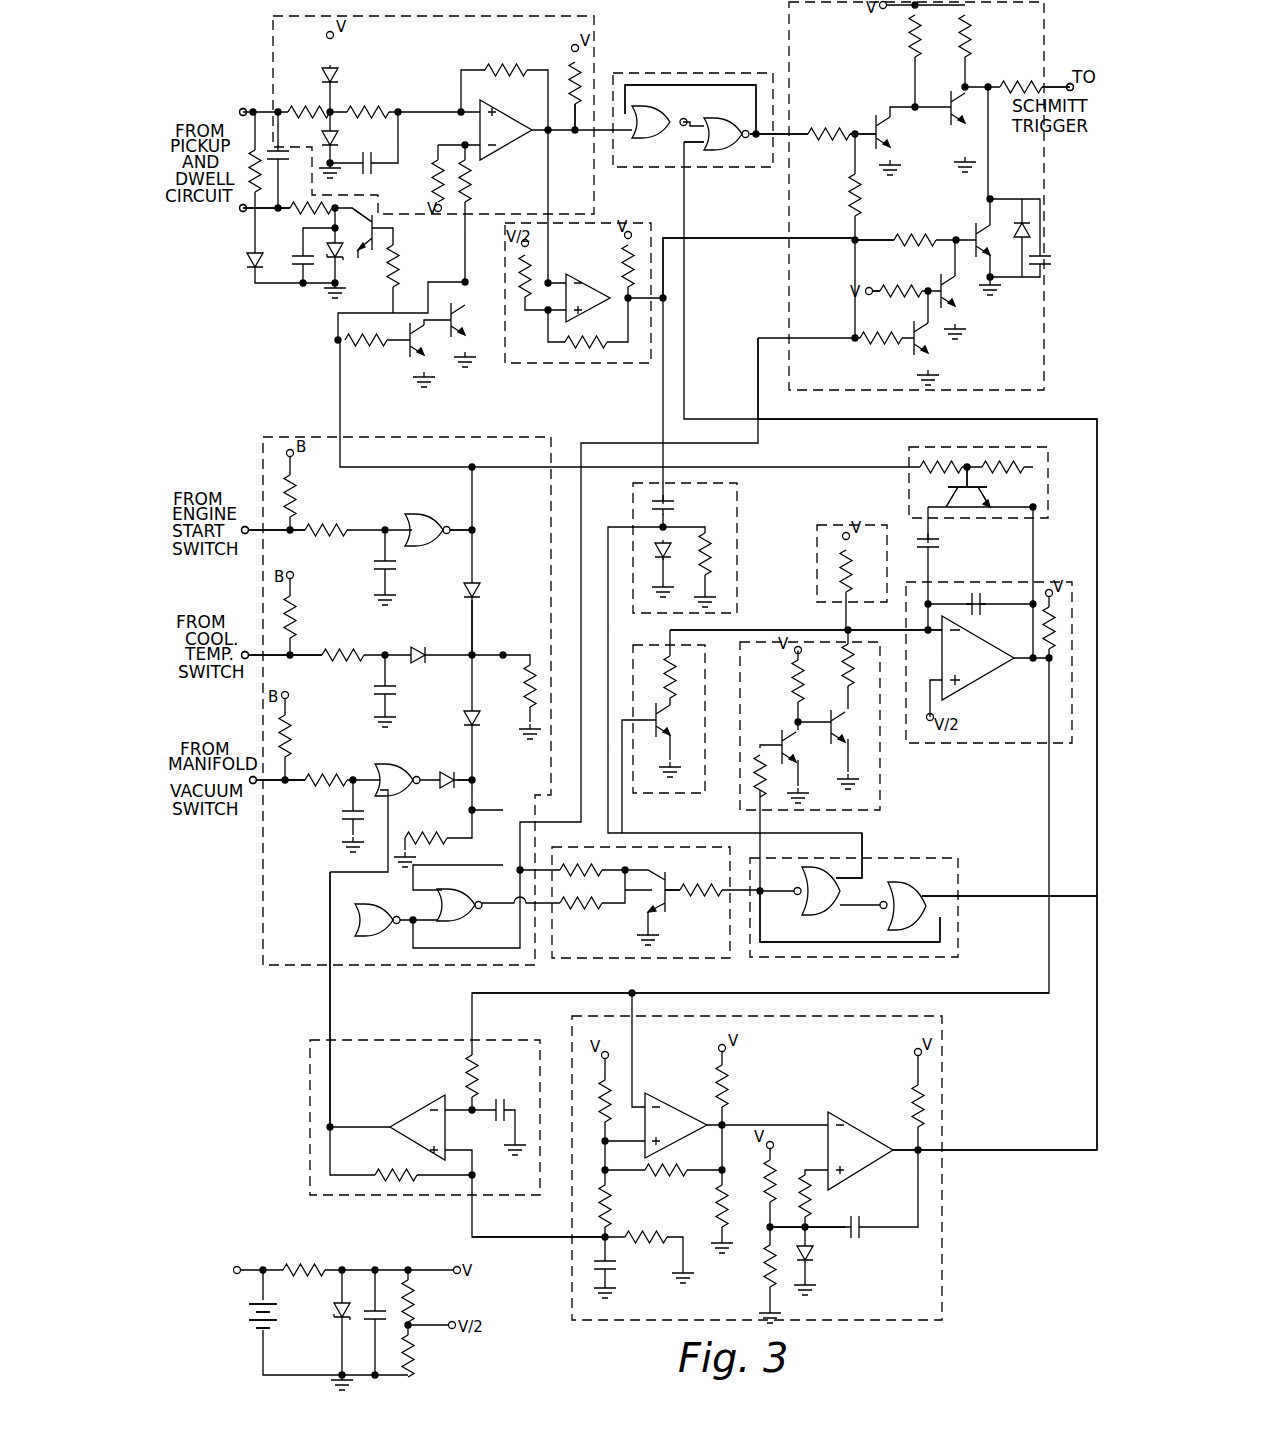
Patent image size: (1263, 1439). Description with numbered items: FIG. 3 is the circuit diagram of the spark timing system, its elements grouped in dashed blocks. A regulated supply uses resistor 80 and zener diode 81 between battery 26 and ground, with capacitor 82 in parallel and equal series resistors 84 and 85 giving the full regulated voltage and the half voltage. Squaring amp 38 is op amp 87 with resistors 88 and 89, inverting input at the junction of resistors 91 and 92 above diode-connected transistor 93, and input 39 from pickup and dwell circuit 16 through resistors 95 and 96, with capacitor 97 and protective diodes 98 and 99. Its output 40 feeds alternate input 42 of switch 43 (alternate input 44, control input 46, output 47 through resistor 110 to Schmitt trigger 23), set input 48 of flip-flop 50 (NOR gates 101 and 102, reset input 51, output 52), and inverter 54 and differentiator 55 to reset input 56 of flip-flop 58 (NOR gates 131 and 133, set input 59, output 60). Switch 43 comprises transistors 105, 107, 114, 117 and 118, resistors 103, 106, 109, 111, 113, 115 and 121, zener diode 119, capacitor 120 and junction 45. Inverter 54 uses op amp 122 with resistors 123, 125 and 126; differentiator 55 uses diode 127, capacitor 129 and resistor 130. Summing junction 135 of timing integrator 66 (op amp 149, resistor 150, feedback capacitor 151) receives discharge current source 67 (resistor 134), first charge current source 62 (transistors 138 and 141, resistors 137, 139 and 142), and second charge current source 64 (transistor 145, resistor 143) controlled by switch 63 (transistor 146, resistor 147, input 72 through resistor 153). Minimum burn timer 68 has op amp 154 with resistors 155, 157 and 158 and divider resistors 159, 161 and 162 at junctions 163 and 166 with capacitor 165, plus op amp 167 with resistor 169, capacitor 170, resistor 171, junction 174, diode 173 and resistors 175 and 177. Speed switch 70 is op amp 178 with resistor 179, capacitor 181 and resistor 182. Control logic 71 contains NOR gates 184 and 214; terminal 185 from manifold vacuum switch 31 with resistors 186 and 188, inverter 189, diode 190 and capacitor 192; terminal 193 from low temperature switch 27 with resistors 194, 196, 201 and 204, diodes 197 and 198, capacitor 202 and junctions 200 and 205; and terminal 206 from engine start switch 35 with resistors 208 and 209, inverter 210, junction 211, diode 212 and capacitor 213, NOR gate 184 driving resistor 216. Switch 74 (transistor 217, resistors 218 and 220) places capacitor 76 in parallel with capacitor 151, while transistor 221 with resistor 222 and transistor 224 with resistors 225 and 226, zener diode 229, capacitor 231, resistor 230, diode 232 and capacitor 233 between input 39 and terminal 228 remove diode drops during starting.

The pickup and dwell circuit 16 is at (245, 197).
The Schmitt trigger 23 is at (1062, 123).
The battery 26 is at (250, 1320).
The low temperature switch 27 is at (248, 679).
The manifold vacuum switch 31 is at (238, 810).
The engine start switch 35 is at (240, 555).
The squaring amp 38 is at (606, 40).
The input 39 is at (243, 112).
The output 40 is at (574, 135).
The alternate input 42 is at (840, 243).
The switch 43 is at (783, 42).
The alternate input 44 is at (852, 140).
The junction 45 is at (852, 335).
The control input 46 is at (762, 340).
The output 47 is at (1068, 82).
The set input 48 is at (638, 140).
The flip-flop 50 is at (656, 62).
The reset input 51 is at (704, 148).
The output 52 is at (752, 140).
The inverter 54 is at (566, 373).
The differentiator 55 is at (746, 499).
The reset input 56 is at (862, 876).
The flip-flop 58 is at (967, 868).
The set input 59 is at (930, 905).
The output 60 is at (797, 896).
The first charge current source 62 is at (890, 806).
The switch 63 is at (690, 970).
The second charge current source 64 is at (695, 798).
The timing integrator 66 is at (1006, 751).
The discharge current source 67 is at (851, 516).
The minimum burn timer 68 is at (953, 1204).
The speed switch 70 is at (382, 1028).
The control logic 71 is at (270, 429).
The input 72 is at (548, 935).
The switch 74 is at (899, 460).
The second capacitor 76 is at (938, 550).
The resistor 80 is at (300, 1264).
The zener diode 81 is at (336, 1318).
The capacitor 82 is at (382, 1308).
The resistor 84 is at (416, 1350).
The resistor 85 is at (416, 1298).
The op amp 87 is at (500, 125).
The resistor 88 is at (570, 70).
The resistor 89 is at (492, 66).
The resistor 91 is at (436, 168).
The resistor 92 is at (470, 178).
The transistor 93 is at (458, 318).
The resistor 95 is at (305, 106).
The resistor 96 is at (370, 106).
The capacitor 97 is at (372, 170).
The diode 98 is at (340, 138).
The diode 99 is at (336, 68).
The NOR gate 101 is at (650, 120).
The NOR gate 102 is at (714, 128).
The resistor 103 is at (815, 128).
The NPN transistor 105 is at (872, 118).
The resistor 106 is at (910, 36).
The NPN transistor 107 is at (945, 115).
The resistor 109 is at (962, 40).
The resistor 110 is at (1015, 82).
The resistor 111 is at (850, 192).
The resistor 113 is at (860, 345).
The NPN transistor 114 is at (915, 345).
The resistor 115 is at (896, 298).
The NPN transistor 117 is at (958, 302).
The NPN transistor 118 is at (976, 232).
The zener diode 119 is at (1020, 218).
The capacitor 120 is at (1036, 268).
The resistor 121 is at (910, 236).
The op amp 122 is at (590, 290).
The resistor 123 is at (525, 292).
The resistor 125 is at (640, 250).
The resistor 126 is at (590, 346).
The diode 127 is at (652, 546).
The capacitor 129 is at (672, 506).
The resistor 130 is at (712, 552).
The NOR gate 131 is at (823, 943).
The NOR gate 133 is at (926, 880).
The resistor 134 is at (840, 568).
The junction 135 is at (845, 628).
The resistor 137 is at (845, 660).
The NPN transistor 138 is at (848, 742).
The resistor 139 is at (794, 680).
The NPN transistor 141 is at (794, 770).
The resistor 142 is at (760, 760).
The resistor 143 is at (668, 672).
The NPN transistor 145 is at (665, 725).
The NPN transistor 146 is at (668, 880).
The resistor 147 is at (702, 896).
The op amp 149 is at (980, 672).
The resistor 150 is at (1048, 600).
The feedback capacitor 151 is at (978, 612).
The resistor 153 is at (578, 910).
The op amp 154 is at (672, 1108).
The resistor 155 is at (728, 1080).
The resistor 157 is at (726, 1205).
The resistor 158 is at (672, 1176).
The resistor 159 is at (568, 1080).
The resistor 161 is at (560, 1240).
The resistor 162 is at (648, 1242).
The junction 163 is at (600, 1130).
The capacitor 165 is at (598, 1268).
The junction 166 is at (612, 1225).
The op amp 167 is at (858, 1135).
The resistor 169 is at (925, 1108).
The capacitor 170 is at (866, 1235).
The resistor 171 is at (812, 1200).
The diode 173 is at (812, 1262).
The junction 174 is at (812, 1238).
The resistor 175 is at (774, 1175).
The resistor 177 is at (766, 1275).
The op amp 178 is at (410, 1118).
The resistor 179 is at (466, 1078).
The capacitor 181 is at (492, 1122).
The resistor 182 is at (385, 1172).
The NOR gate 184 is at (355, 918).
The input terminal 185 is at (253, 785).
The resistor 186 is at (290, 730).
The resistor 188 is at (328, 775).
The inverter 189 is at (388, 766).
The diode 190 is at (447, 772).
The capacitor 192 is at (345, 816).
The input terminal 193 is at (245, 651).
The resistor 194 is at (296, 614).
The resistor 196 is at (342, 650).
The diode 197 is at (420, 647).
The diode 198 is at (470, 710).
The junction 200 is at (478, 780).
The resistor 201 is at (432, 842).
The capacitor 202 is at (394, 693).
The resistor 204 is at (532, 675).
The junction 205 is at (476, 650).
The input terminal 206 is at (245, 526).
The resistor 208 is at (296, 494).
The resistor 209 is at (330, 537).
The inverter 210 is at (425, 520).
The junction 211 is at (474, 525).
The diode 212 is at (478, 588).
The capacitor 213 is at (396, 566).
The NOR gate 214 is at (440, 900).
The resistor 216 is at (578, 866).
The NPN transistor 217 is at (962, 494).
The resistor 218 is at (1008, 462).
The resistor 220 is at (938, 462).
The transistor 221 is at (430, 355).
The resistor 222 is at (366, 346).
The NPN transistor 224 is at (374, 226).
The resistor 225 is at (398, 270).
The resistor 226 is at (305, 206).
The terminal 228 is at (243, 208).
The zener diode 229 is at (336, 250).
The resistor 230 is at (256, 172).
The capacitor 231 is at (300, 262).
The diode 232 is at (250, 262).
The capacitor 233 is at (278, 146).